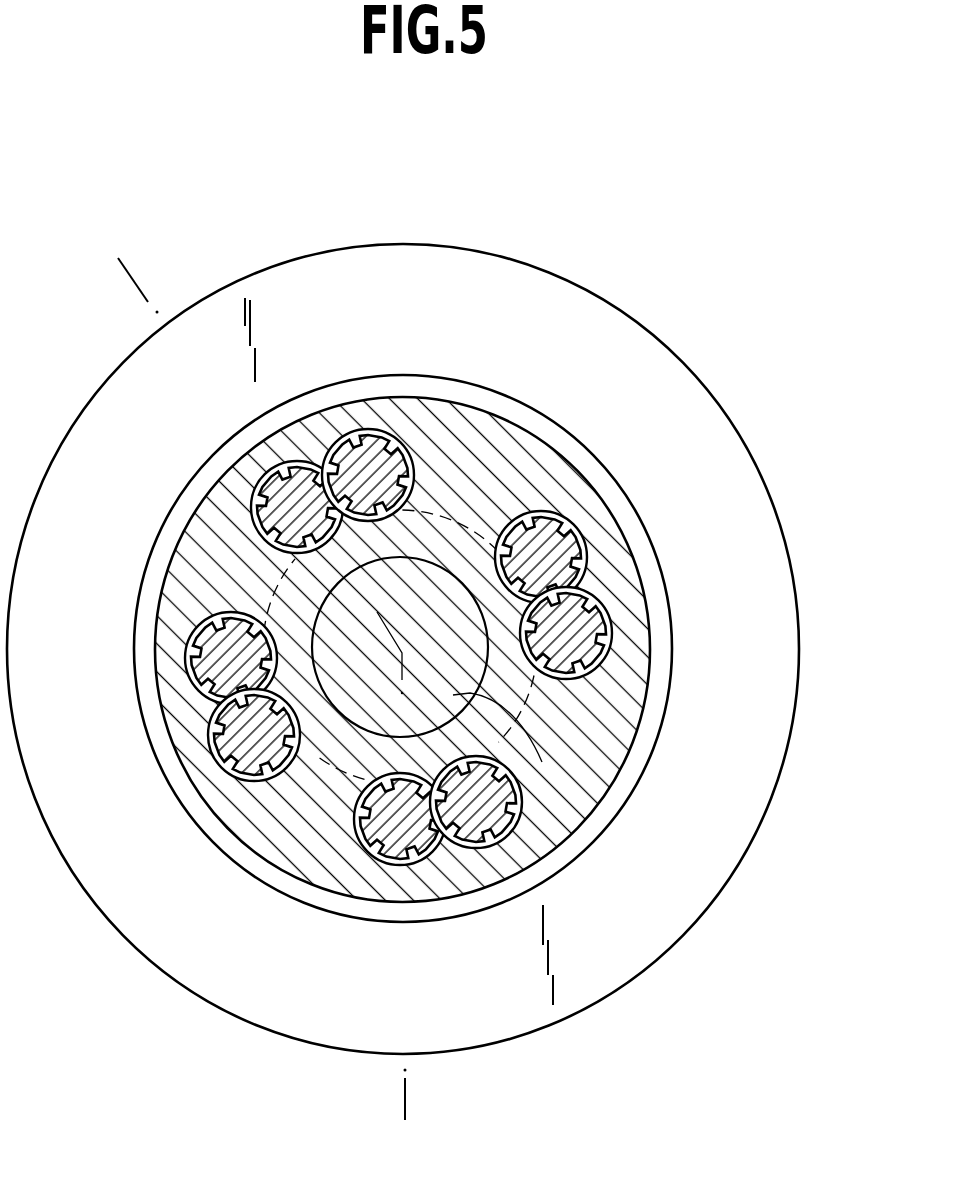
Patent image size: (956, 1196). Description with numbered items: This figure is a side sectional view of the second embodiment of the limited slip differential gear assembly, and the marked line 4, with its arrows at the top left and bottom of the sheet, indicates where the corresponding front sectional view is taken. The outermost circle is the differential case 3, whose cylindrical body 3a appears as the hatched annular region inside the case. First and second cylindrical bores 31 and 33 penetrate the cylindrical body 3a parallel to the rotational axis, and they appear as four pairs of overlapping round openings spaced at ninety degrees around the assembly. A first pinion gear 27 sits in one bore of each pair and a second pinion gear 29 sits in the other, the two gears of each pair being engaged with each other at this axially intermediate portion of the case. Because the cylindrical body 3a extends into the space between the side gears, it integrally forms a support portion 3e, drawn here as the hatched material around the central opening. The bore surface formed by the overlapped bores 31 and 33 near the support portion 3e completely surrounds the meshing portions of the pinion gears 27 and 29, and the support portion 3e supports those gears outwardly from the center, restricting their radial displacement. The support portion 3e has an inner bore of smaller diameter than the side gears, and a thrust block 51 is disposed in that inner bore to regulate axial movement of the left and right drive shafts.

The differential case 3 is at (439, 246).
The cylindrical body 3a is at (655, 583).
The support portion 3e is at (410, 537).
The first pinion gear 27 is at (385, 437).
The second pinion gear 29 is at (297, 478).
The first cylindrical bore 31 is at (610, 624).
The second cylindrical bore 33 is at (568, 533).
The thrust block 51 is at (578, 798).
The line 4— 4 is at (122, 275).